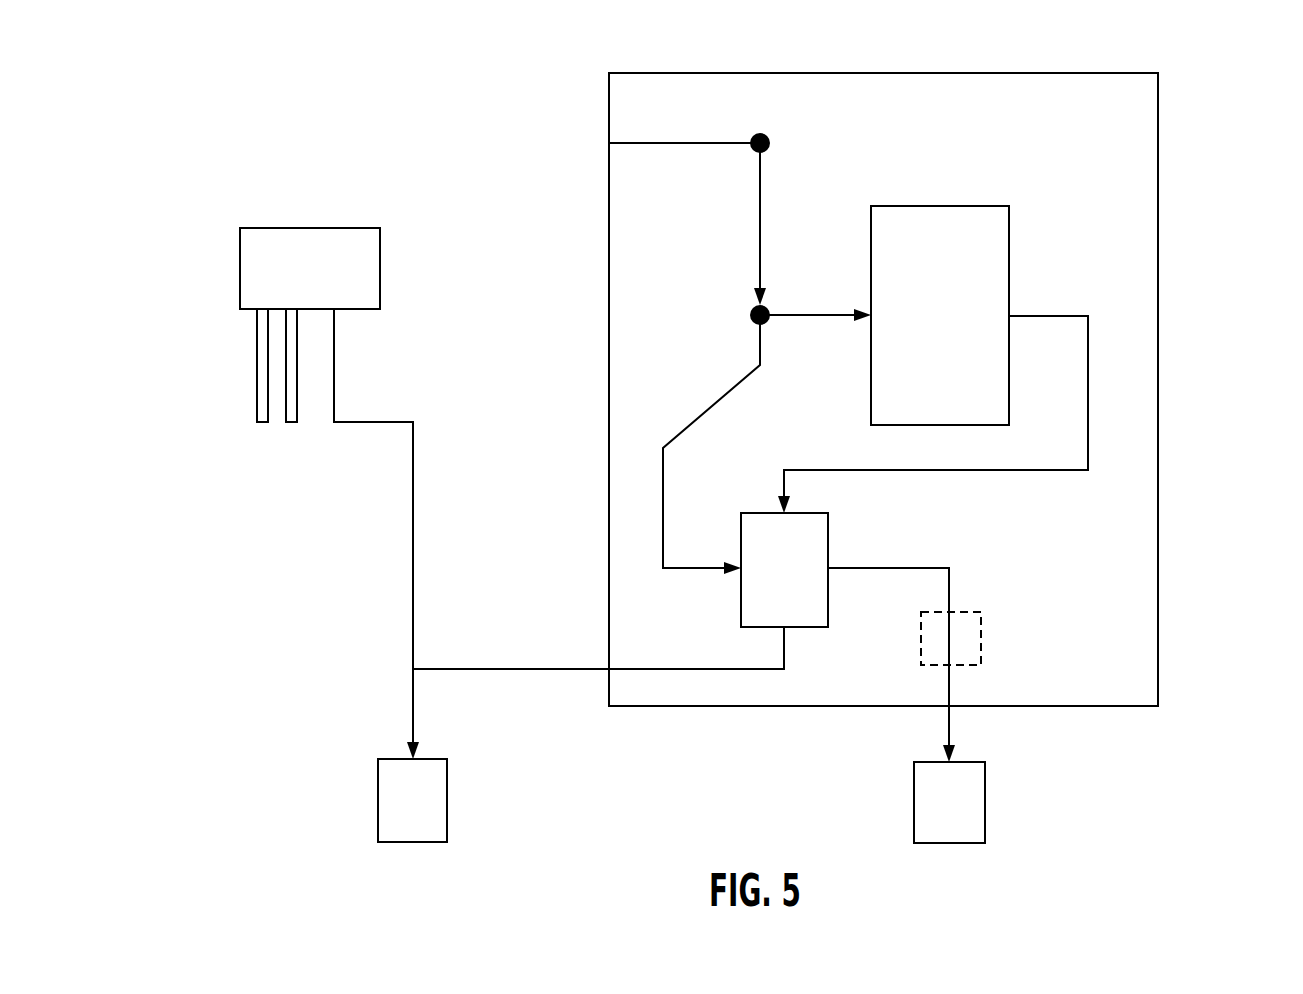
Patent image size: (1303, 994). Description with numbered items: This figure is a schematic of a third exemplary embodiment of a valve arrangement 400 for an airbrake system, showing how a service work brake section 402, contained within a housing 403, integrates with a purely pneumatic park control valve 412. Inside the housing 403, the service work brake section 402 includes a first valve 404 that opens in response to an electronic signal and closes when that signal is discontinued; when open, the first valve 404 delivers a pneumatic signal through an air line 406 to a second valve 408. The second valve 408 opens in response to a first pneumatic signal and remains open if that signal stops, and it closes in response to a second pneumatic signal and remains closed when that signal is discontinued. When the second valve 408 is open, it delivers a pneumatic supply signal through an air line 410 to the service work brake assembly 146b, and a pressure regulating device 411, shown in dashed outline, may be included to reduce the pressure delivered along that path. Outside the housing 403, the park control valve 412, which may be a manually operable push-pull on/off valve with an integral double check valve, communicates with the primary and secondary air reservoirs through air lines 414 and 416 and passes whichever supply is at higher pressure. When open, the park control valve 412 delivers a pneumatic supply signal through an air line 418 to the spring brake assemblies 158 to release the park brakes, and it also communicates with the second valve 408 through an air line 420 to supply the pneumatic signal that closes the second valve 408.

The valve arrangement 400 is at (1184, 70).
The service work brake section 402 is at (1128, 192).
The housing 403 is at (1158, 272).
The first valve 404 is at (935, 223).
The air line 406 is at (1088, 405).
The second valve 408 is at (828, 545).
The air line 410 is at (949, 718).
The pressure regulating device 411 is at (981, 638).
The park control valve 412 is at (380, 273).
The air line 414 is at (257, 377).
The air line 416 is at (297, 408).
The air line 418 is at (413, 697).
The air line 420 is at (652, 669).
The spring brake assemblies 158 is at (447, 803).
The valve 146b is at (985, 797).